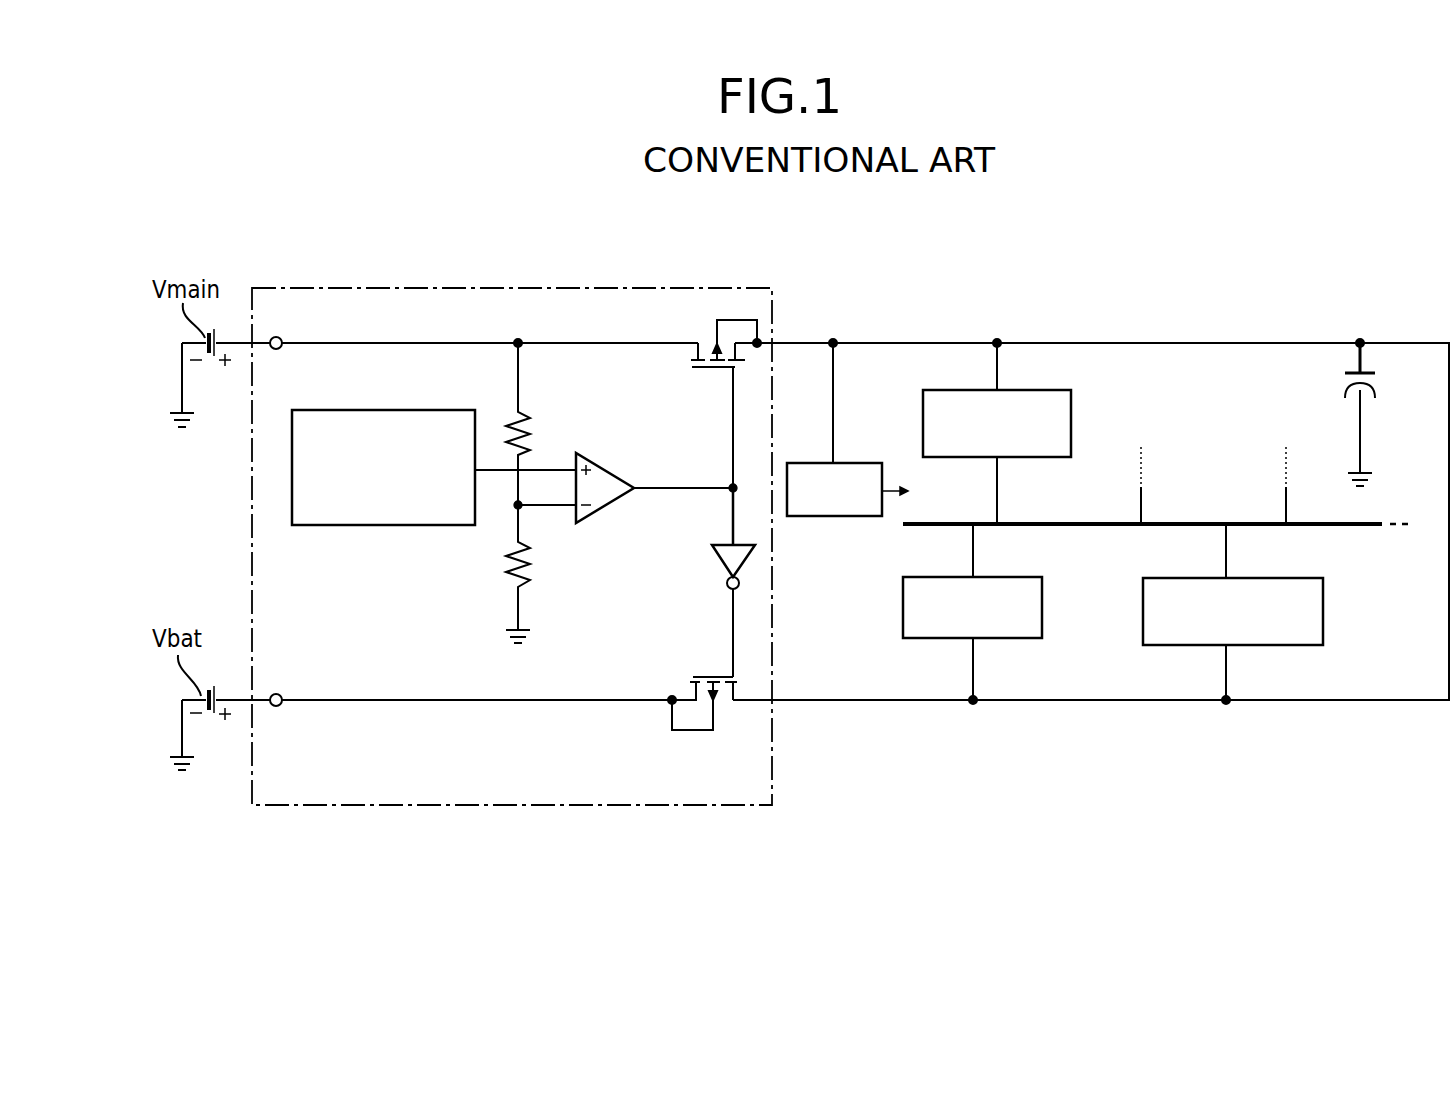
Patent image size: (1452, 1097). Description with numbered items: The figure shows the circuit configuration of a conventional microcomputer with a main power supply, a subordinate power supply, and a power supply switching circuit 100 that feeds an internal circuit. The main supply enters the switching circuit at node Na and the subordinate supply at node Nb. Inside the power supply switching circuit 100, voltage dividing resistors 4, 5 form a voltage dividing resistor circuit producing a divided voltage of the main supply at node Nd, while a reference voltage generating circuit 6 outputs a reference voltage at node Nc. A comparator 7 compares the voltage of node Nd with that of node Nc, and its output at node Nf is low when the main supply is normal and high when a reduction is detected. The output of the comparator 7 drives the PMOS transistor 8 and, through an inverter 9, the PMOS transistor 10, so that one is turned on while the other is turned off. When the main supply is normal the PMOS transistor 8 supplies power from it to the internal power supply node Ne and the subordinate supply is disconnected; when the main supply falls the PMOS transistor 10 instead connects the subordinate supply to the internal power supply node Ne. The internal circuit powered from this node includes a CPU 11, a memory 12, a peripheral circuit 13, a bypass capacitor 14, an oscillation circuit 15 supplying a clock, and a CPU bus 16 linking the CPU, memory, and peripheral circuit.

The power supply switching circuit 100 is at (643, 289).
The voltage dividing resistor 4 is at (526, 420).
The voltage dividing resistor 5 is at (505, 568).
The reference voltage generating circuit 6 is at (381, 410).
The comparator 7 is at (622, 497).
The PMOS transistor 8 is at (713, 370).
The inverter 9 is at (718, 565).
The PMOS transistor 10 is at (708, 675).
The CPU 11 is at (1071, 413).
The memory 12 is at (1043, 613).
The peripheral circuit 13 is at (1323, 616).
The bypass capacitor 14 is at (1343, 390).
The oscillation circuit 15 is at (811, 462).
The CPU bus 16 is at (1355, 523).
The node Na is at (278, 338).
The node Nb is at (278, 694).
The node Nc is at (558, 470).
The node Nd is at (555, 508).
The internal power supply node Ne is at (885, 343).
The node Nf is at (733, 437).